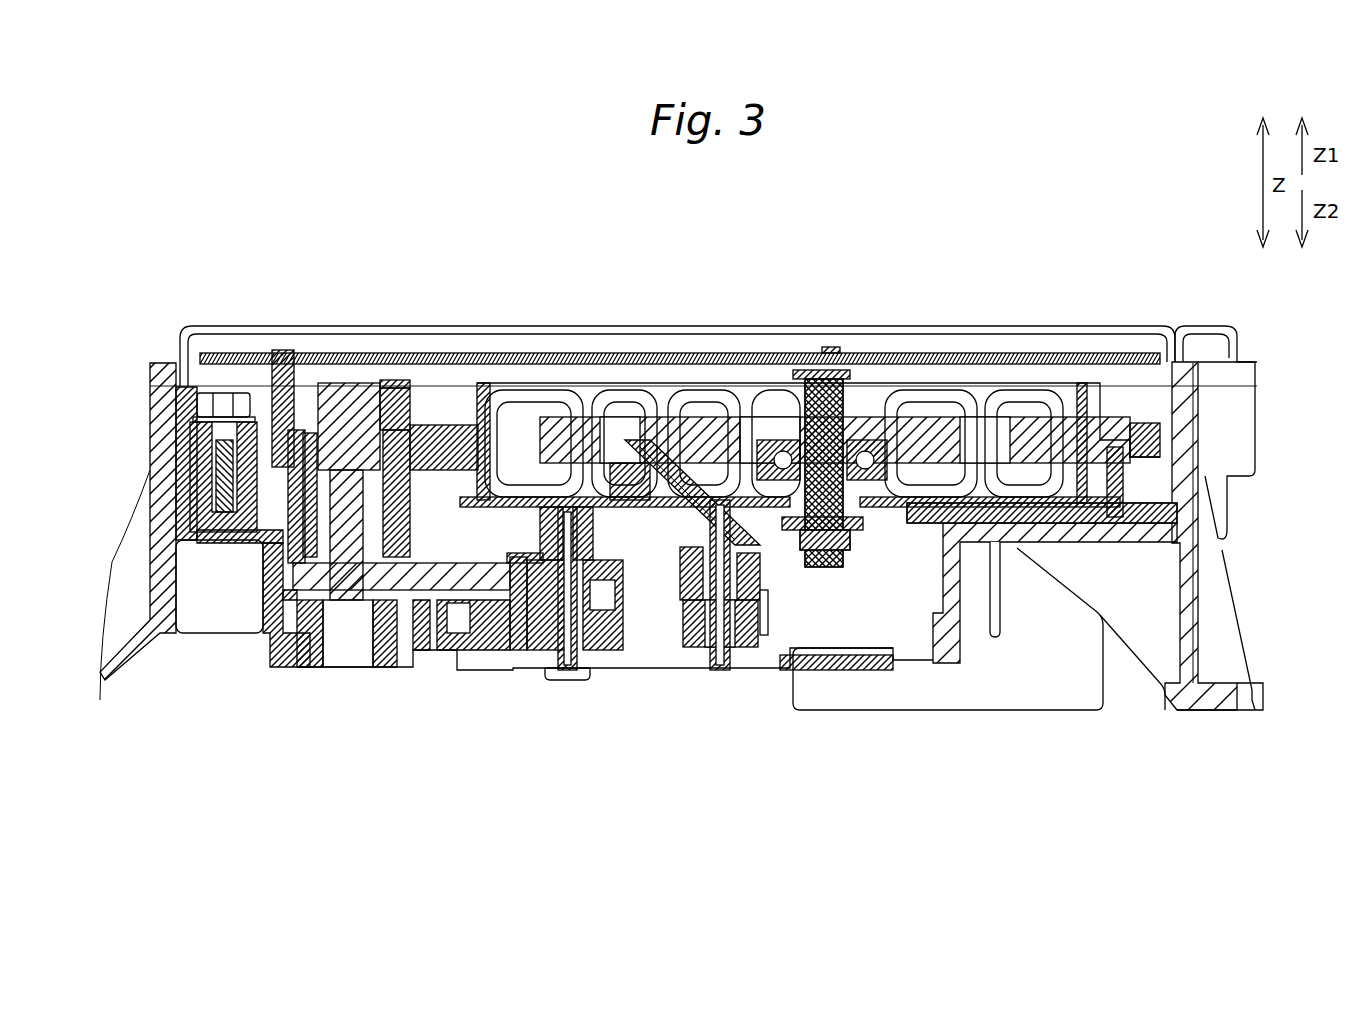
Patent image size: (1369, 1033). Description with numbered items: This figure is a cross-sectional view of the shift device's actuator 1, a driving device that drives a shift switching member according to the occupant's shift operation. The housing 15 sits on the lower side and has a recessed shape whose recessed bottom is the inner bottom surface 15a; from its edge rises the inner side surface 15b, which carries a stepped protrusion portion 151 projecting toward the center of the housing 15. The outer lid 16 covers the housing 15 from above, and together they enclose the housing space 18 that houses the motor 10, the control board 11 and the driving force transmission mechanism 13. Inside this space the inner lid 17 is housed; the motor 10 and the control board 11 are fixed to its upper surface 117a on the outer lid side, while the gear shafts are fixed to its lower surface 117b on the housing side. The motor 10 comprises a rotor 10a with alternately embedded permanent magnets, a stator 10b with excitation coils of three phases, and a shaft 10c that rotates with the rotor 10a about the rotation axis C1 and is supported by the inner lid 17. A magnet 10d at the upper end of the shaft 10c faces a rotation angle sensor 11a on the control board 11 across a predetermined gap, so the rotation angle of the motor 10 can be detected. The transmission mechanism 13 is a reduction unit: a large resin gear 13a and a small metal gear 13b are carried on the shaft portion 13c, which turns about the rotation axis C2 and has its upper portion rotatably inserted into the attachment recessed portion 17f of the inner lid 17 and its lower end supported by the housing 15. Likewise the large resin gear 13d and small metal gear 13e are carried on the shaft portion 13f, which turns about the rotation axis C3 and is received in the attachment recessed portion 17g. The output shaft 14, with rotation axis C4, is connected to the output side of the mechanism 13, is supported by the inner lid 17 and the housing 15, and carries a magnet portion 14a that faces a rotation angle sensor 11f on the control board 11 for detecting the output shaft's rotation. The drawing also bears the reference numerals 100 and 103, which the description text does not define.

The imaging apparatus 100 is at (122, 182).
The actuator 1 is at (120, 357).
The fixing screw 103 is at (230, 395).
The output shaft 14 is at (348, 388).
The rotation angle sensor 11f is at (386, 380).
The magnet portion 14a is at (397, 388).
The housing space 18 is at (463, 380).
The stator 10b is at (540, 428).
The rotor 10a is at (607, 415).
The outer lid 16 is at (653, 328).
The control board 11 is at (757, 350).
The magnet 10d is at (803, 370).
The rotation axis C1 is at (824, 372).
The rotation angle sensor 11a is at (832, 368).
The motor 10 is at (956, 378).
The inner lid 17 is at (1143, 420).
The inner side surface 15b is at (1158, 496).
The surface of the inner lid on the Z1 direction side 117a is at (1068, 512).
The surface of the inner lid on the Z2 direction side 117b is at (1013, 516).
The protrusion portion 151 is at (940, 597).
The shaft 10c is at (856, 532).
The gear 13a is at (778, 542).
The gear 13b is at (762, 606).
The driving force transmission mechanism 13 is at (772, 628).
The inner bottom surface 15a is at (871, 664).
The attachment recessed portion 17f is at (702, 520).
The attachment recessed portion 17g is at (560, 540).
The gear 13e is at (515, 560).
The shaft portion 13f is at (575, 662).
The gear 13d is at (657, 652).
The shaft portion 13c is at (732, 652).
The rotation axis C4 is at (348, 376).
The rotation axis C3 is at (567, 500).
The rotation axis C2 is at (720, 495).
The housing 15 is at (705, 668).